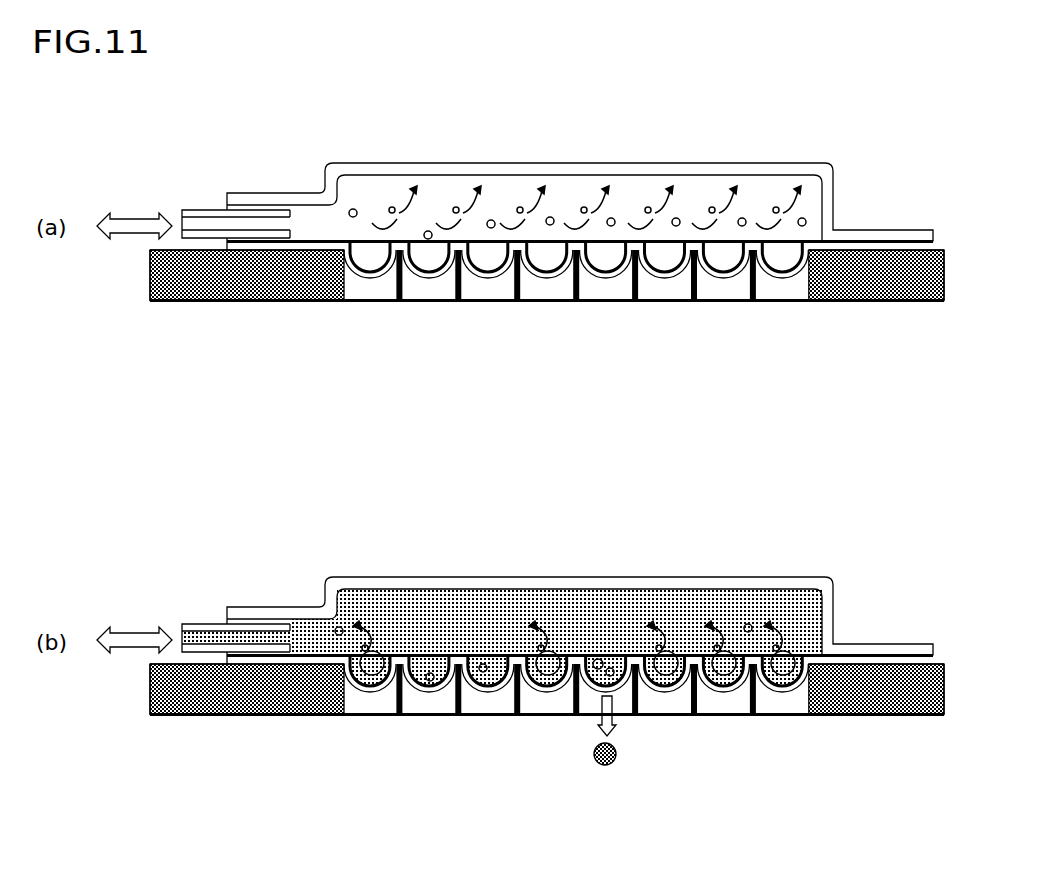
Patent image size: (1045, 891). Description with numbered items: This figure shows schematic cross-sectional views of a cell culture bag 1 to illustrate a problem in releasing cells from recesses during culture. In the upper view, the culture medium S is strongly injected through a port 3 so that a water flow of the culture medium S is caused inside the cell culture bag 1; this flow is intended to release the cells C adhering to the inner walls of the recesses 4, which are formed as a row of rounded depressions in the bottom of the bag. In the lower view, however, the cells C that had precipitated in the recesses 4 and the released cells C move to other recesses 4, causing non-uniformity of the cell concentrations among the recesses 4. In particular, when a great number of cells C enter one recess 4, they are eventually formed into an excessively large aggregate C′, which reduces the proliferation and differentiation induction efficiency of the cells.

The cell culture bag 1 is at (717, 162).
The port 3 is at (201, 209).
The recess 4 is at (371, 280).
The culture medium S is at (498, 190).
The cell C is at (355, 208).
The excessively large aggregate C′ is at (598, 764).